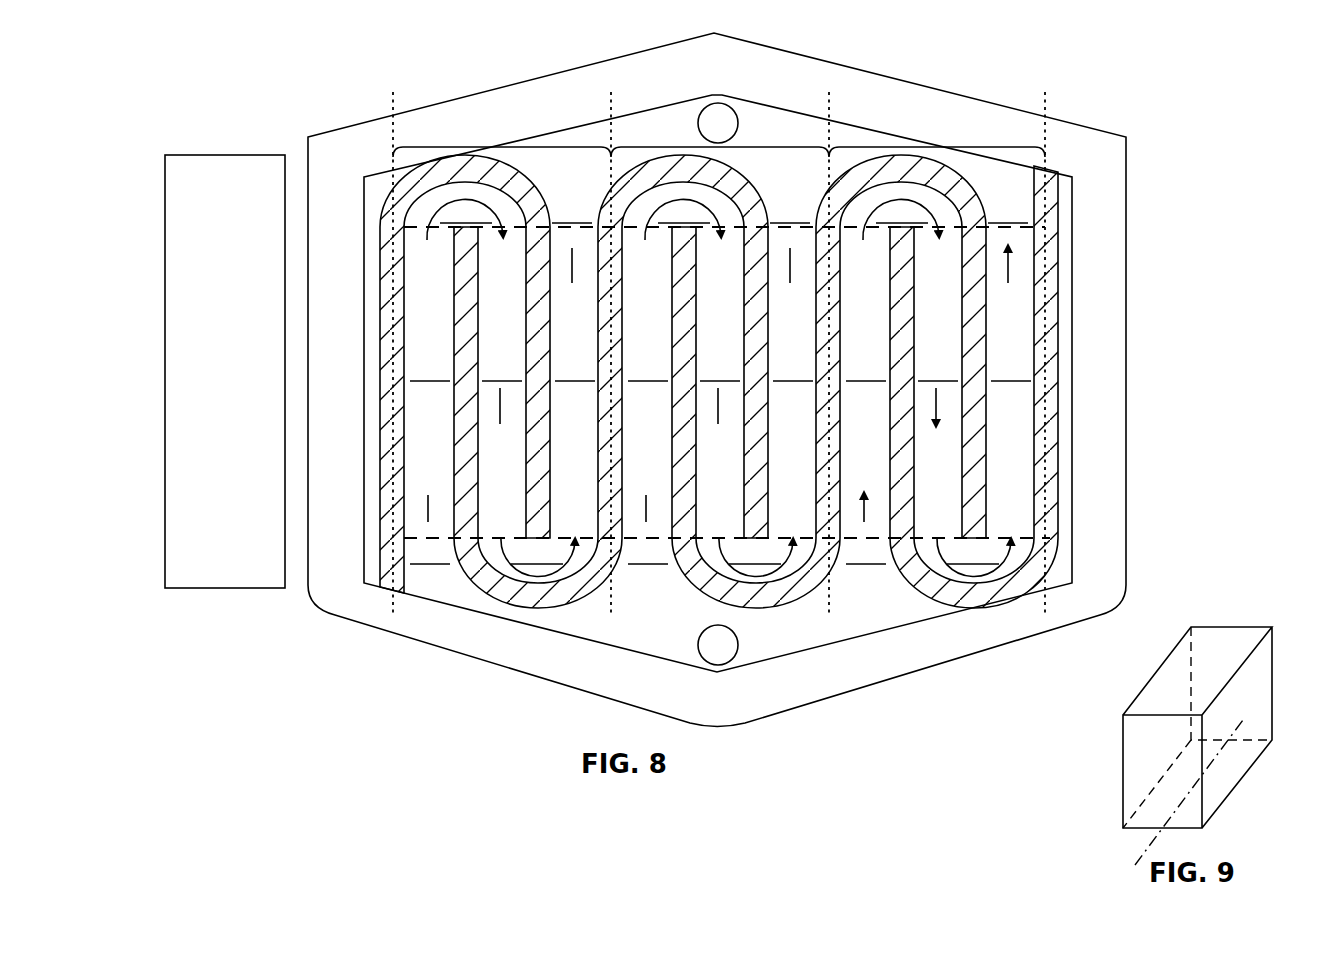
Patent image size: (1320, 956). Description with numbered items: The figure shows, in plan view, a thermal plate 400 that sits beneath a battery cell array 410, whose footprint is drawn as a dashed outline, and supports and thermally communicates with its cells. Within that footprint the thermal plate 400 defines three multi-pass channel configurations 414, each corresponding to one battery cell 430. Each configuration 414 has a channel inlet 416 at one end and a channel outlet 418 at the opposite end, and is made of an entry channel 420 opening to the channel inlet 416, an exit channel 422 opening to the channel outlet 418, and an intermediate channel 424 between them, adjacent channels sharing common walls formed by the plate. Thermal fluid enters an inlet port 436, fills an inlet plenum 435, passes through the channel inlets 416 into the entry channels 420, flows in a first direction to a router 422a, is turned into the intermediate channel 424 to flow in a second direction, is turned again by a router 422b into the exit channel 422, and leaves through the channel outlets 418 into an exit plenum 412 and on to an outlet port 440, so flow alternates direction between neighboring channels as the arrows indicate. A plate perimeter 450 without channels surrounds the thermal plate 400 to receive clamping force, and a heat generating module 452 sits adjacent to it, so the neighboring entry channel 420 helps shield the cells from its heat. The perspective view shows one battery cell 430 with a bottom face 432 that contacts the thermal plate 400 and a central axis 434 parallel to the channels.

In FIG. 8, the thermal plate 400 is at (408, 70).
In FIG. 8, the battery cell array 410 is at (1045, 331).
In FIG. 8, the exit plenum 412 is at (803, 135).
In FIG. 8, the multi-pass channel configuration 414 is at (505, 146).
In FIG. 8, the channel inlet 416 is at (647, 546).
In FIG. 8, the channel outlet 418 is at (792, 219).
In FIG. 8, the entry channel 420 is at (647, 382).
In FIG. 8, the exit channel 422 is at (792, 382).
In FIG. 8, the router 422a is at (683, 219).
In FIG. 8, the router 422b is at (756, 557).
In FIG. 8, the intermediate channel 424 is at (720, 382).
In FIG. 9, the battery cell 430 is at (1222, 627).
In FIG. 9, the bottom face 432 is at (1210, 802).
In FIG. 9, the central axis 434 is at (1218, 750).
In FIG. 8, the inlet plenum 435 is at (805, 633).
In FIG. 8, the inlet port 436 is at (735, 657).
In FIG. 8, the outlet port 440 is at (740, 124).
In FIG. 8, the plate perimeter 450 is at (352, 604).
In FIG. 8, the heat generating module 452 is at (200, 155).